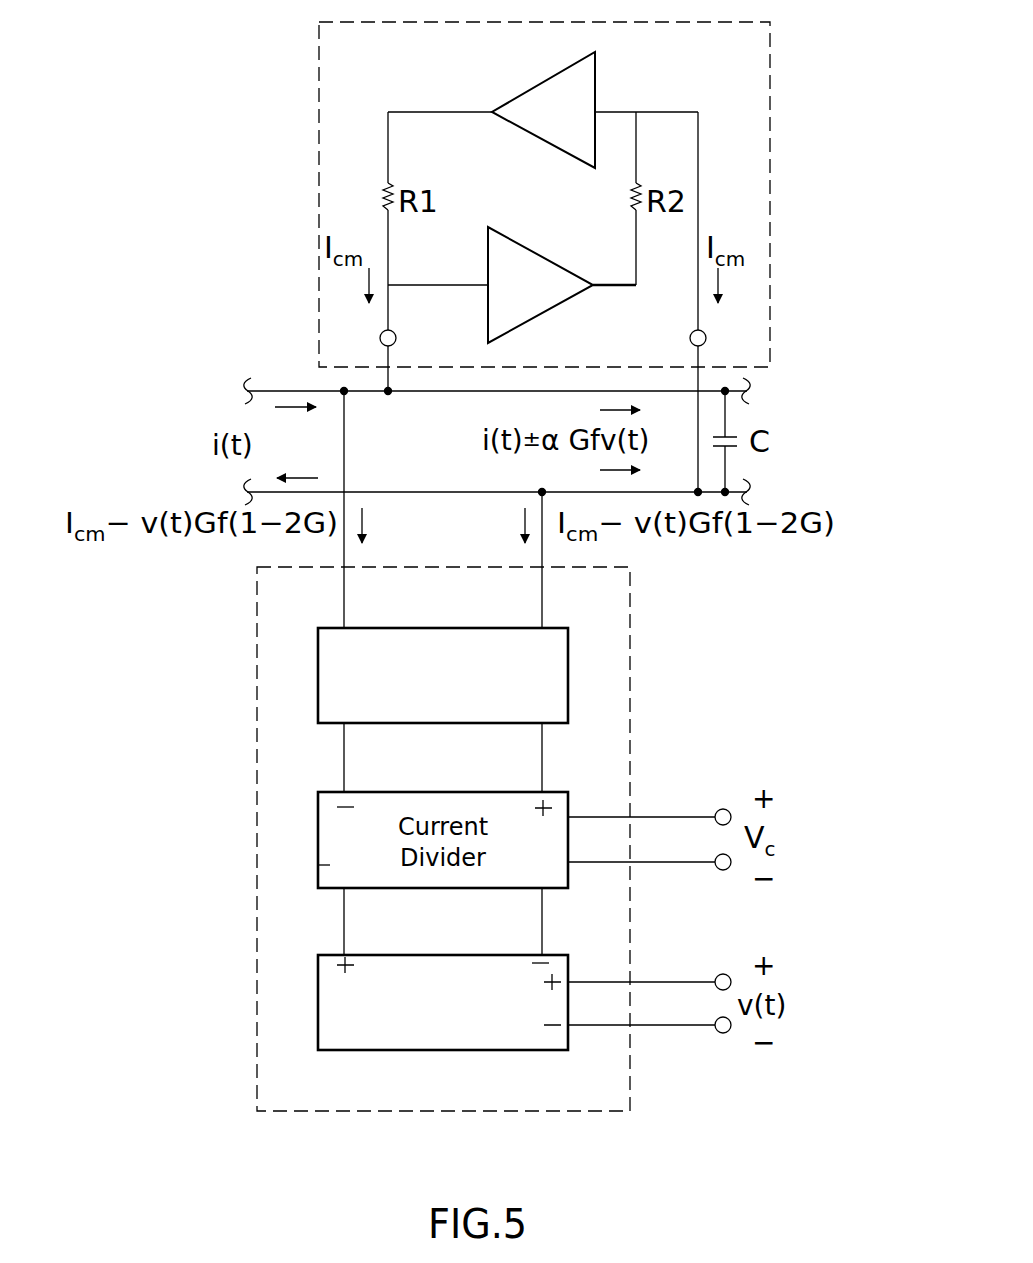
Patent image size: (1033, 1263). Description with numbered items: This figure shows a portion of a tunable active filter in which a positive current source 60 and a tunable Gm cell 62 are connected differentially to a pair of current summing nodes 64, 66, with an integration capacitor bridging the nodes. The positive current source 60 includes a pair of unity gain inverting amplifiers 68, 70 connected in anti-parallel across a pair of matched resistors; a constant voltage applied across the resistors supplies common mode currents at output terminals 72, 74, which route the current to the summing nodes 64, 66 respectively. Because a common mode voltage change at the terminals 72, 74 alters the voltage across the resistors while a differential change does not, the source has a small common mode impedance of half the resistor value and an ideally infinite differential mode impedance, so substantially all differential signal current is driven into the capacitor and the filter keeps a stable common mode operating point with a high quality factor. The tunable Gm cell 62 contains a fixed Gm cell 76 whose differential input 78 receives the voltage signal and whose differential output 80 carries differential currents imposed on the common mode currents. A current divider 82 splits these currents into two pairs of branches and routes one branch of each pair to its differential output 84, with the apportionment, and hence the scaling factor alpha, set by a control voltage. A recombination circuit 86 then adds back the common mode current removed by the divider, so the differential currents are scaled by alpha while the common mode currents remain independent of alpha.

The positive current source 60 is at (770, 128).
The tunable Gm cell 62 is at (255, 988).
The current summing node 64 is at (389, 396).
The current summing node 66 is at (539, 490).
The unity gain inverting amplifier 68 is at (545, 257).
The unity gain inverting amplifier 70 is at (543, 78).
The output terminal 72 is at (397, 337).
The output terminal 74 is at (689, 337).
The fixed Gm cell 76 is at (493, 1033).
The differential input 78 is at (572, 970).
The differential output 80 is at (332, 955).
The current divider 82 is at (318, 865).
The differential output 84 is at (330, 792).
The recombination circuit 86 is at (568, 676).